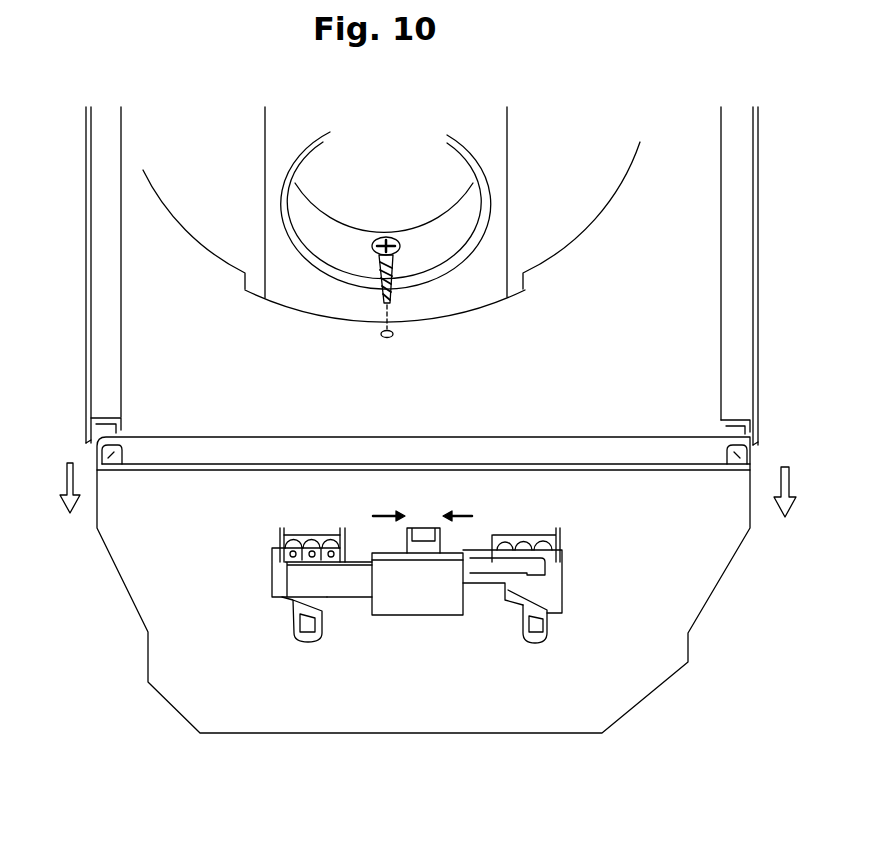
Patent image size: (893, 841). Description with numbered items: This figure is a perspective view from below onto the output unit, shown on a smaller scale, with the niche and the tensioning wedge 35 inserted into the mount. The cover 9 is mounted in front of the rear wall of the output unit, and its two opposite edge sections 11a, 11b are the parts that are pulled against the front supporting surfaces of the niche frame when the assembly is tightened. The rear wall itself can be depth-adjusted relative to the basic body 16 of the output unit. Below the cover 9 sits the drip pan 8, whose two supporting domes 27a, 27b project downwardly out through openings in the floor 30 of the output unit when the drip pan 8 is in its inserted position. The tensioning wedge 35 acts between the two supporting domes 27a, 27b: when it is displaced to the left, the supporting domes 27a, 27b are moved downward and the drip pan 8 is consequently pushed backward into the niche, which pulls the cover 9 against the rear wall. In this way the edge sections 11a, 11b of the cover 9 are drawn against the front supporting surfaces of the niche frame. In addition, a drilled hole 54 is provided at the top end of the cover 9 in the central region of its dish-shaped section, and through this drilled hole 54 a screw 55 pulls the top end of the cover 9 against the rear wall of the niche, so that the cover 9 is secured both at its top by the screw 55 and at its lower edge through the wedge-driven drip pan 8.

The drip pan 8 is at (533, 447).
The cover 9 is at (558, 293).
The edge section 11a is at (107, 348).
The edge section 11b is at (730, 312).
The basic body 16 is at (483, 388).
The supporting dome 27a is at (290, 617).
The supporting dome 27b is at (552, 626).
The floor 30 is at (431, 693).
The tensioning wedge 35 is at (553, 587).
The drilled hole 54 is at (380, 334).
The screw 55 is at (390, 244).